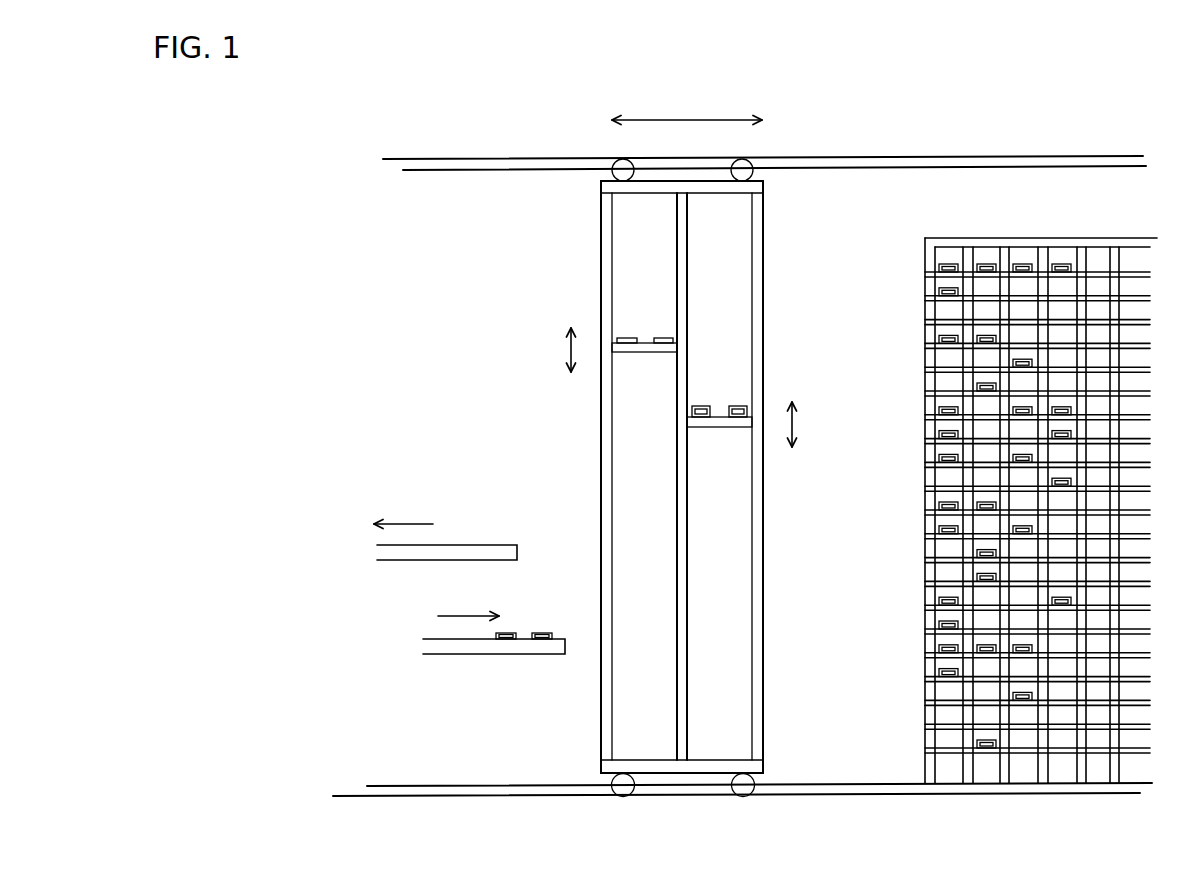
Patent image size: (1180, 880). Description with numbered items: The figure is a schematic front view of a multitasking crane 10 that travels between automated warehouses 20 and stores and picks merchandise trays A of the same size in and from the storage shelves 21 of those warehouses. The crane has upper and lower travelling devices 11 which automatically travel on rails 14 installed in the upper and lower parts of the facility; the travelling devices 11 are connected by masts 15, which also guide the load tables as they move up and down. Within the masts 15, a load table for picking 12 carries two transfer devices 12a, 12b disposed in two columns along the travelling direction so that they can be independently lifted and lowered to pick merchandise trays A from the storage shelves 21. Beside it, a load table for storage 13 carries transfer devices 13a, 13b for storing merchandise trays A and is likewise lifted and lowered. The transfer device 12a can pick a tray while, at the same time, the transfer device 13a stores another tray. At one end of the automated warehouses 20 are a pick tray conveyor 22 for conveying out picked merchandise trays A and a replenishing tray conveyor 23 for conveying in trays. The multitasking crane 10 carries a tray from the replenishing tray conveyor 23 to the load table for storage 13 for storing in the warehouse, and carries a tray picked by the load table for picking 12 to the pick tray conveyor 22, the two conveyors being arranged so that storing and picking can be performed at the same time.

The multitasking crane 10 is at (583, 246).
The travelling device 11 is at (752, 170).
The load table for picking 12 is at (624, 350).
The transfer device 12a is at (626, 338).
The transfer device 12b is at (659, 338).
The load table for storage 13 is at (738, 453).
The transfer device 13a is at (697, 428).
The transfer device 13b is at (735, 428).
The rail 14 is at (863, 163).
The mast 15 is at (608, 452).
The automated warehouse 20 is at (1013, 483).
The storage shelf 21 is at (1100, 258).
The pick tray conveyor 22 is at (483, 552).
The replenishing tray conveyor 23 is at (466, 650).
The merchandise tray A is at (705, 405).